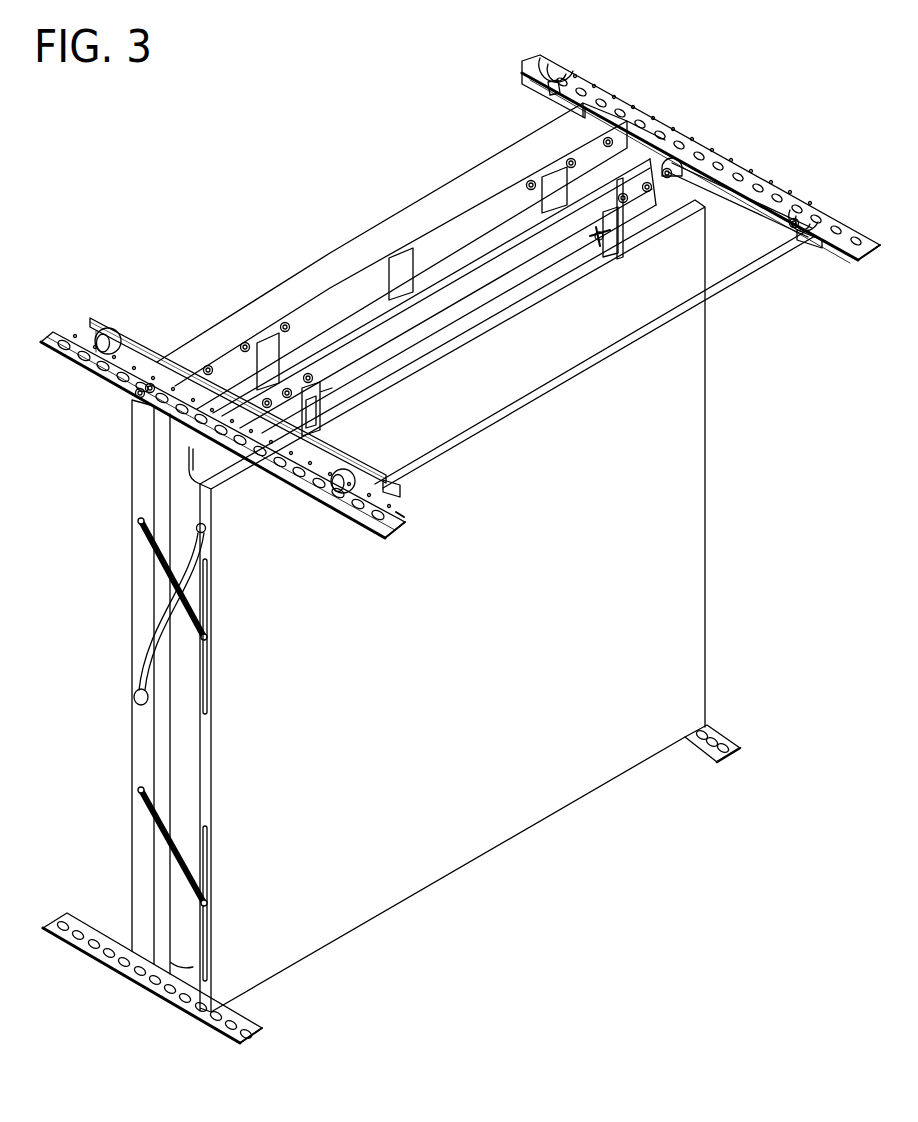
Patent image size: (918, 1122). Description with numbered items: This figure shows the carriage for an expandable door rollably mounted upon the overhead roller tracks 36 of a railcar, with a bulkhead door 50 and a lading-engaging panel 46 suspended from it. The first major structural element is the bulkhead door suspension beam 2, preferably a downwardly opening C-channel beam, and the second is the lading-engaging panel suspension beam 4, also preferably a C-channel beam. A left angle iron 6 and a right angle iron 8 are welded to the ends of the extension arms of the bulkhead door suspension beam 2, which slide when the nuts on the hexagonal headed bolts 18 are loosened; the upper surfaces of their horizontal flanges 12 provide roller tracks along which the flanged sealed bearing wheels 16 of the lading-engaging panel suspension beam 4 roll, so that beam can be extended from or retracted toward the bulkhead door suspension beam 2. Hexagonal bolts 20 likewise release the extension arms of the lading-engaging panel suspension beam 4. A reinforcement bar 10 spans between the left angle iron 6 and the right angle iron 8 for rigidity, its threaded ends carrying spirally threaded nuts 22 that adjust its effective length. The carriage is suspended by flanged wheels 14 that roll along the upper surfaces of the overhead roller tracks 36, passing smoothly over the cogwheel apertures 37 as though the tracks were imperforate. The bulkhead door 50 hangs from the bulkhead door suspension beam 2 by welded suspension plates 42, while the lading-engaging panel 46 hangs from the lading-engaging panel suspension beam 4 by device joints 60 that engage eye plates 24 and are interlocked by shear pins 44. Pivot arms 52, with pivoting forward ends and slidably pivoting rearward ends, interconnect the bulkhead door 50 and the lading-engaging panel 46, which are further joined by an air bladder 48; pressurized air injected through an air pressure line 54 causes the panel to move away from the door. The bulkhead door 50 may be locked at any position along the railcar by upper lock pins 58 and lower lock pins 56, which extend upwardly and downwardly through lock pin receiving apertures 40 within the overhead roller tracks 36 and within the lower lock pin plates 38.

The bulkhead door suspension beam 2 is at (330, 270).
The lading-engaging panel suspension beam 4 is at (410, 322).
The left angle iron 6 is at (295, 462).
The right angle iron 8 is at (700, 167).
The reinforcement bar 10 is at (770, 262).
The horizontal flanges 12 is at (735, 200).
The flanged wheels 14 is at (568, 60).
The flanged sealed bearing wheels 16 is at (672, 160).
The hexagonal headed bolts 18 is at (245, 345).
The hexagonal bolts 20 is at (320, 390).
The spirally threaded nuts 22 is at (366, 526).
The eye plates 24 is at (318, 408).
The overhead roller tracks 36 is at (391, 540).
The cogwheel apertures 37 is at (388, 507).
The lower lock pin plates 38 is at (720, 762).
The lock pin receiving apertures 40 is at (72, 335).
The suspension plates 42 is at (400, 265).
The shear pins 44 is at (603, 240).
The lading-engaging panel 46 is at (642, 517).
The air bladder 48 is at (188, 497).
The bulkhead door 50 is at (143, 572).
The pivot arms 52 is at (165, 828).
The air pressure line 54 is at (137, 672).
The lower lock pins 56 is at (150, 985).
The upper lock pins 58 is at (140, 393).
The device joints 60 is at (638, 262).